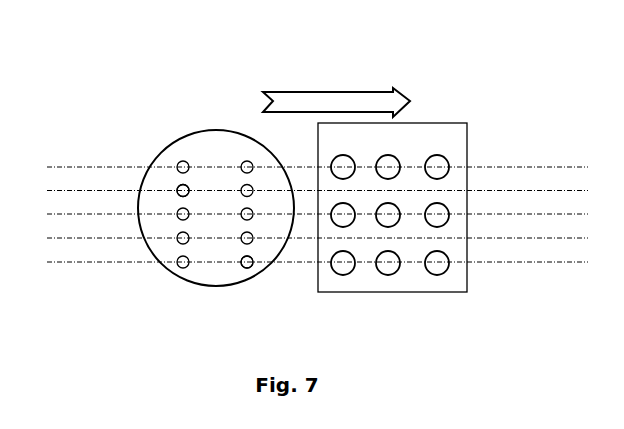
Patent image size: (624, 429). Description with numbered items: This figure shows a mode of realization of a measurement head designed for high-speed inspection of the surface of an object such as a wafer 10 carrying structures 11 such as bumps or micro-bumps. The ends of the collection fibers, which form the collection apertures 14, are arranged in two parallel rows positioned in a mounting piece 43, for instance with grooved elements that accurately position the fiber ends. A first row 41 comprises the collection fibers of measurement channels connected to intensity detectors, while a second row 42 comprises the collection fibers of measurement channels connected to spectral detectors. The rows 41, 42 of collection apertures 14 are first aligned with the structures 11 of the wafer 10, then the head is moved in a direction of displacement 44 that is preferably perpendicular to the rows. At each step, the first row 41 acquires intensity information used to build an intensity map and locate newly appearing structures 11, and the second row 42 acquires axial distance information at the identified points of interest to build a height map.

The wafer 10 is at (395, 293).
The structures 11 is at (450, 165).
The collection apertures 14 is at (177, 191).
The first row 41 is at (245, 160).
The second row 42 is at (181, 160).
The mounting piece 43 is at (160, 273).
The direction of displacement 44 is at (394, 88).